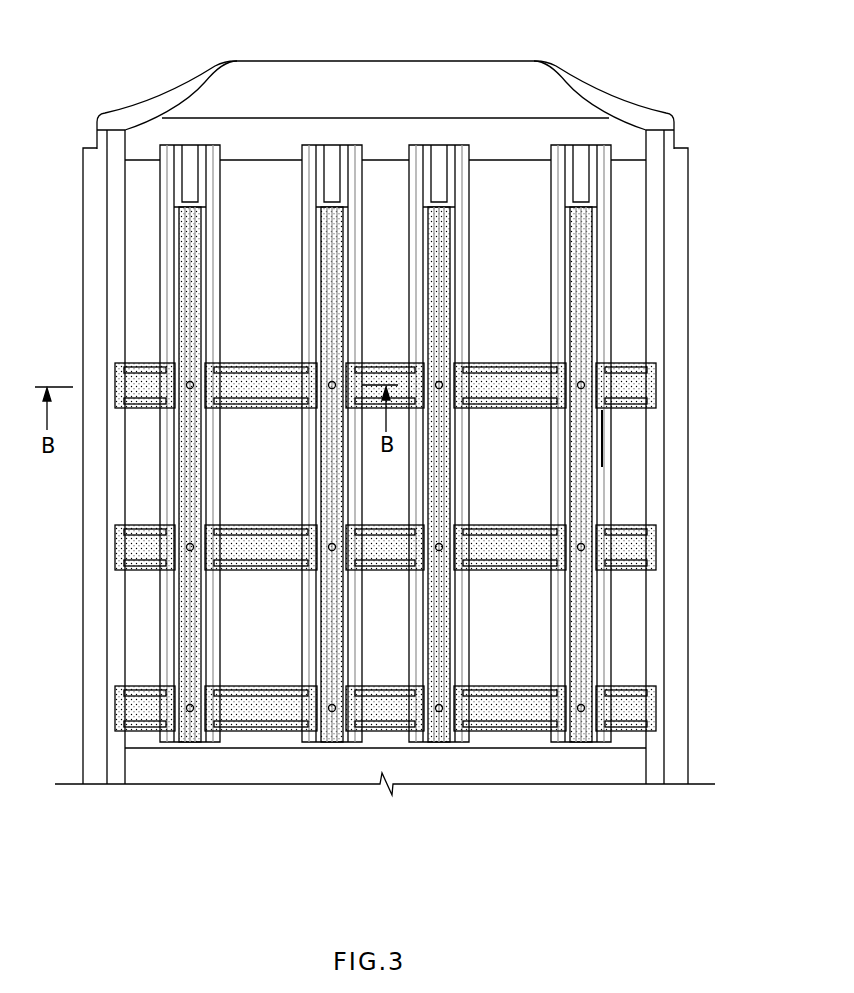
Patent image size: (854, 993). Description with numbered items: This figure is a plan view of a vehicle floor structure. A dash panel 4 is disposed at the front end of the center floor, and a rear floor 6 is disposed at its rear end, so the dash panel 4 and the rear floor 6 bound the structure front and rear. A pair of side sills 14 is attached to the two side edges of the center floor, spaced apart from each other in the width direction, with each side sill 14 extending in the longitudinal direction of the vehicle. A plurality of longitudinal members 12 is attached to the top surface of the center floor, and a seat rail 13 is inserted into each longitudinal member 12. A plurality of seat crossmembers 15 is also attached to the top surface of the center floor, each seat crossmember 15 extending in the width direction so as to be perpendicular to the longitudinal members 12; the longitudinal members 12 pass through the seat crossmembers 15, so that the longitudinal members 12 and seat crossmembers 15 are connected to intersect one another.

The dash panel 4 is at (385, 73).
The rear floor 6 is at (517, 770).
The longitudinal member 12 is at (173, 230).
The seat rail 13 is at (192, 330).
The side sill 14 is at (117, 283).
The seat crossmember 15 is at (130, 550).